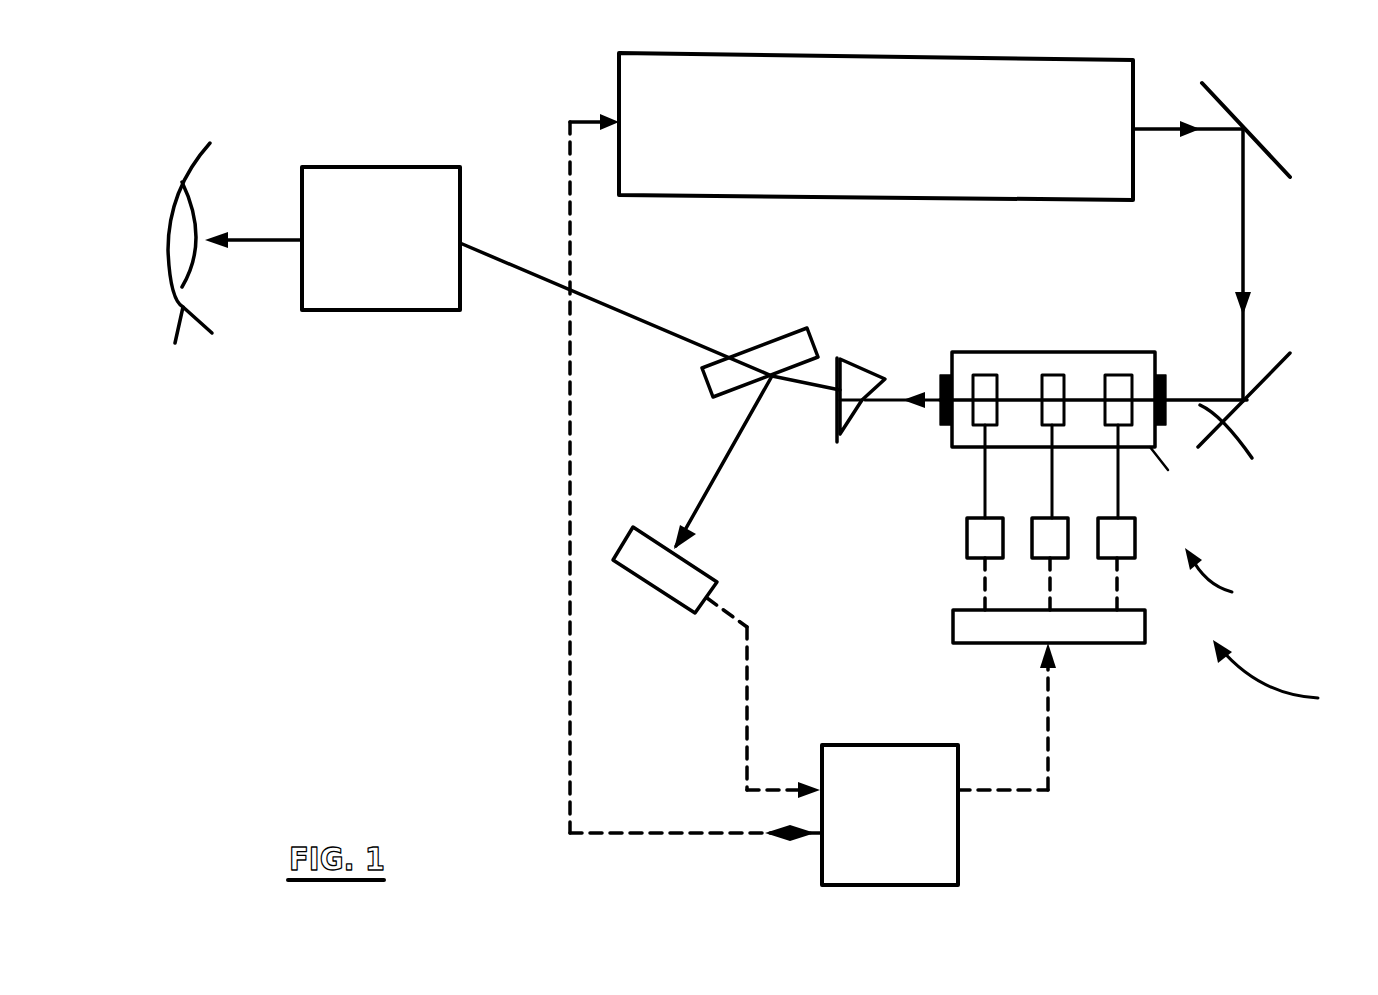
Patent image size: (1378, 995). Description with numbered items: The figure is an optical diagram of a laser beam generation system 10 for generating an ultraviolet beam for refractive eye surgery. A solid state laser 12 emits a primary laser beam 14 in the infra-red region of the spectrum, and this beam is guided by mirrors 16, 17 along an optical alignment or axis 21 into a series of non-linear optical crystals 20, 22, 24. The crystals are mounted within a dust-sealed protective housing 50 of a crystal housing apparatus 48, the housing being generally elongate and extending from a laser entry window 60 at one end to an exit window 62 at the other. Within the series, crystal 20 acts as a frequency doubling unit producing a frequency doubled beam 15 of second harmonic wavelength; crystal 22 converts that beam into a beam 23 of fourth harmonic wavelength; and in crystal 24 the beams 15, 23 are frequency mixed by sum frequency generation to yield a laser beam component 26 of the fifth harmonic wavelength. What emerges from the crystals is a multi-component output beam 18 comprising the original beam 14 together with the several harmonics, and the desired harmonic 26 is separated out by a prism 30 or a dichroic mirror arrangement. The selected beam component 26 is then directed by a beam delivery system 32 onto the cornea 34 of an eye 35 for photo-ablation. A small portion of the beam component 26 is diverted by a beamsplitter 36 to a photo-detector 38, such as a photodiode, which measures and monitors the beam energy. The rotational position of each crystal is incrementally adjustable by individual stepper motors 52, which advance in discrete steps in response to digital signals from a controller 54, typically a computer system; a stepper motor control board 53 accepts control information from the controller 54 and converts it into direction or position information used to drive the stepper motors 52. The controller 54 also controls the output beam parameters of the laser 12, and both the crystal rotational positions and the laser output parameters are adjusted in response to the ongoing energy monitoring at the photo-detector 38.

The laser beam generation system 10 is at (1286, 676).
The solid state laser 12 is at (876, 126).
The primary laser beam 14 is at (1243, 227).
The frequency doubled beam 15 is at (1085, 393).
The mirror 16 is at (1223, 103).
The mirror 17 is at (1268, 380).
The multi-component output beam 18 is at (878, 393).
The NLO crystal 20 is at (1127, 375).
The optical alignment or axis 21 is at (1234, 451).
The NLO crystal 22 is at (1052, 375).
The fourth harmonic beam 23 is at (1020, 395).
The NLO crystal 24 is at (982, 377).
The laser beam component 26 is at (802, 383).
The prism 30 is at (862, 408).
The beam delivery system 32 is at (415, 223).
The cornea 34 is at (202, 210).
The eye 35 is at (177, 374).
The beam splitter 36 is at (788, 342).
The photo-detector 38 is at (665, 577).
The crystal housing apparatus 48 is at (1227, 583).
The protective housing 50 is at (1177, 472).
The stepper motors 52 is at (967, 542).
The stepper motor control board 53 is at (1102, 632).
The controller 54 is at (890, 815).
The laser entry window 60 is at (1168, 387).
The exit window 62 is at (938, 413).